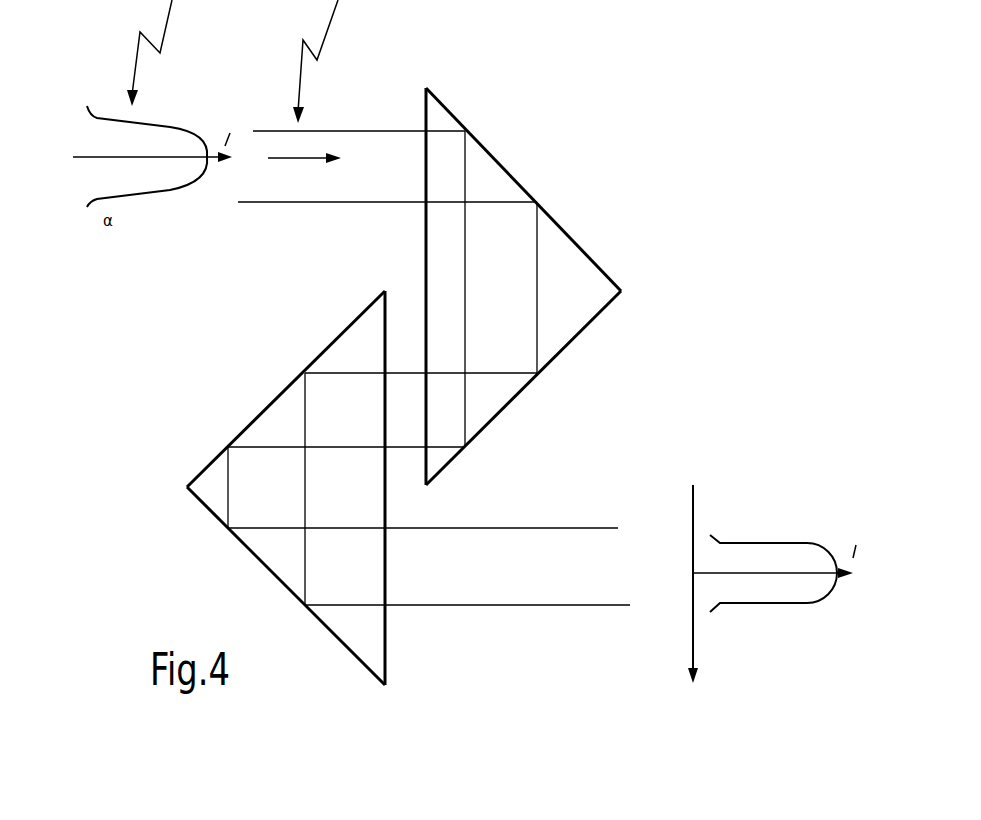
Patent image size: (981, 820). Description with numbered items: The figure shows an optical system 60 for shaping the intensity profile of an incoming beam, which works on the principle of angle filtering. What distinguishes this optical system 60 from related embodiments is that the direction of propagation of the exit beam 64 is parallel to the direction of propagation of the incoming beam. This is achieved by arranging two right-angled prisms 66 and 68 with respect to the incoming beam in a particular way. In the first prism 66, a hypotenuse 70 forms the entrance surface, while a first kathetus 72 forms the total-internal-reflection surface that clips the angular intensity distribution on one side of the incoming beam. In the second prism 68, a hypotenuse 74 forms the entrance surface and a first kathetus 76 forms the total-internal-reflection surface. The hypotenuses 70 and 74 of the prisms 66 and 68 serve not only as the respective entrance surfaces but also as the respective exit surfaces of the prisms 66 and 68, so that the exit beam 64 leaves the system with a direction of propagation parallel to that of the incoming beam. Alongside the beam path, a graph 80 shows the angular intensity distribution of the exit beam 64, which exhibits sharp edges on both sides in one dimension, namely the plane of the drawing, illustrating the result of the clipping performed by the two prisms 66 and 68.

The optical system 60 is at (677, 152).
The exit beam 64 is at (513, 630).
The first right-angled prism 66 is at (568, 270).
The second right-angled prism 68 is at (247, 502).
The hypotenuse of first prism 70 is at (425, 240).
The first kathetus of first prism 72 is at (508, 172).
The hypotenuse of second prism 74 is at (385, 322).
The first kathetus of second prism 76 is at (265, 407).
The graph of angular intensity distribution of exit beam 80 is at (750, 512).